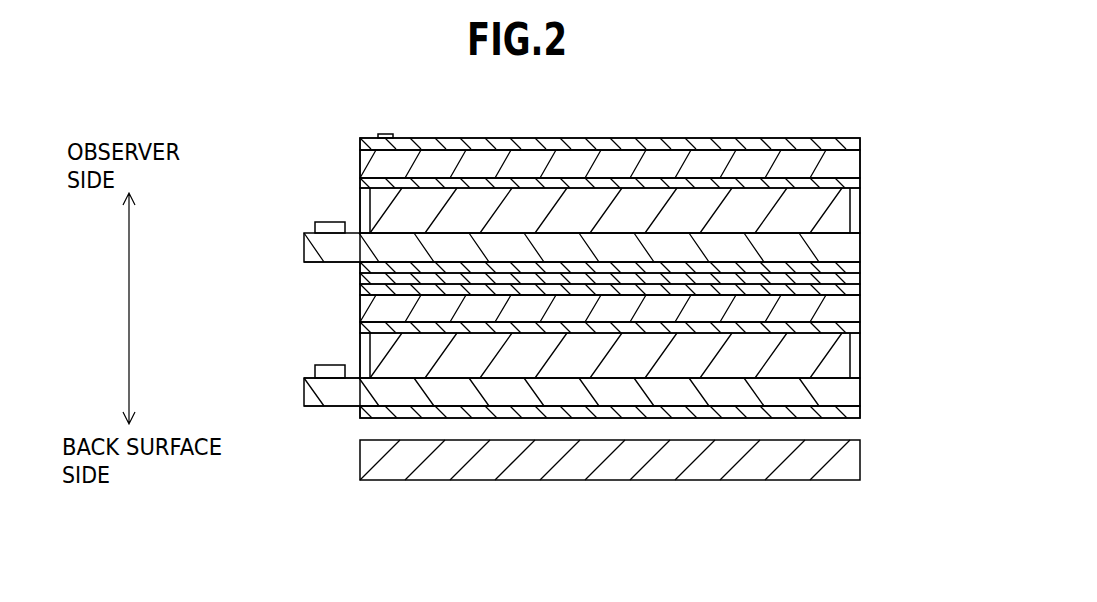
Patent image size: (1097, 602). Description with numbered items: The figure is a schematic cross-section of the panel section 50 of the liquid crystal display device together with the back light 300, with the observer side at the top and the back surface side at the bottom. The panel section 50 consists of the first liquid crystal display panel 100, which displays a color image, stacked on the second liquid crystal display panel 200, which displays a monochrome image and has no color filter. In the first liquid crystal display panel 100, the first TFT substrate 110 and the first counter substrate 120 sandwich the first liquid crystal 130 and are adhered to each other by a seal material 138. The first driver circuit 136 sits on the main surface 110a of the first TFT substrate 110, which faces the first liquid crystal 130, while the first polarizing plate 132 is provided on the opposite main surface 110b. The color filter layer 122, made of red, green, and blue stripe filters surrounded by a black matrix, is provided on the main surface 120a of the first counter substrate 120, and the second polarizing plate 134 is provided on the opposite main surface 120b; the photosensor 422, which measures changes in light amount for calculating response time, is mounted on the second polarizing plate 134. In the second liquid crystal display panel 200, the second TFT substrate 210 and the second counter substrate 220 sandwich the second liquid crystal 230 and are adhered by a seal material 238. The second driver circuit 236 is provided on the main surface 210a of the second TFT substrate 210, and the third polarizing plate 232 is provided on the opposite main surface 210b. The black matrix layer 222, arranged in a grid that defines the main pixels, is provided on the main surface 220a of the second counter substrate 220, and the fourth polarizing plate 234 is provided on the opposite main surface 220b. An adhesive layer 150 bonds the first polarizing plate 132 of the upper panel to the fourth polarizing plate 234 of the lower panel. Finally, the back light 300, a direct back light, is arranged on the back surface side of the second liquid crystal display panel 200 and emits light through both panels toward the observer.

The panel section 50 is at (863, 134).
The first liquid crystal display panel 100 is at (243, 127).
The first TFT substrate 110 is at (304, 247).
The main surface of first TFT substrate 110a is at (797, 233).
The main surface of first TFT substrate 110b is at (860, 251).
The first counter substrate 120 is at (360, 164).
The main surface of first counter substrate 120a is at (757, 178).
The main surface of first counter substrate 120b is at (703, 149).
The color filter layer 122 is at (860, 186).
The first liquid crystal 130 is at (360, 210).
The first polarizing plate 132 is at (360, 267).
The second polarizing plate 134 is at (360, 144).
The first driver circuit 136 is at (318, 228).
The seal material 138 is at (860, 216).
The adhesive layer 150 is at (860, 282).
The second liquid crystal display panel 200 is at (243, 283).
The second TFT substrate 210 is at (304, 392).
The main surface of second TFT substrate 210a is at (795, 367).
The main surface of second TFT substrate 210b is at (740, 397).
The second counter substrate 220 is at (360, 308).
The main surface of second counter substrate 220a is at (676, 312).
The main surface of second counter substrate 220b is at (860, 297).
The black matrix layer 222 is at (860, 330).
The second liquid crystal 230 is at (360, 355).
The third polarizing plate 232 is at (360, 412).
The fourth polarizing plate 234 is at (360, 289).
The second driver circuit 236 is at (318, 371).
The seal material 238 is at (860, 360).
The back light 300 is at (360, 460).
The photosensor 422 is at (386, 133).